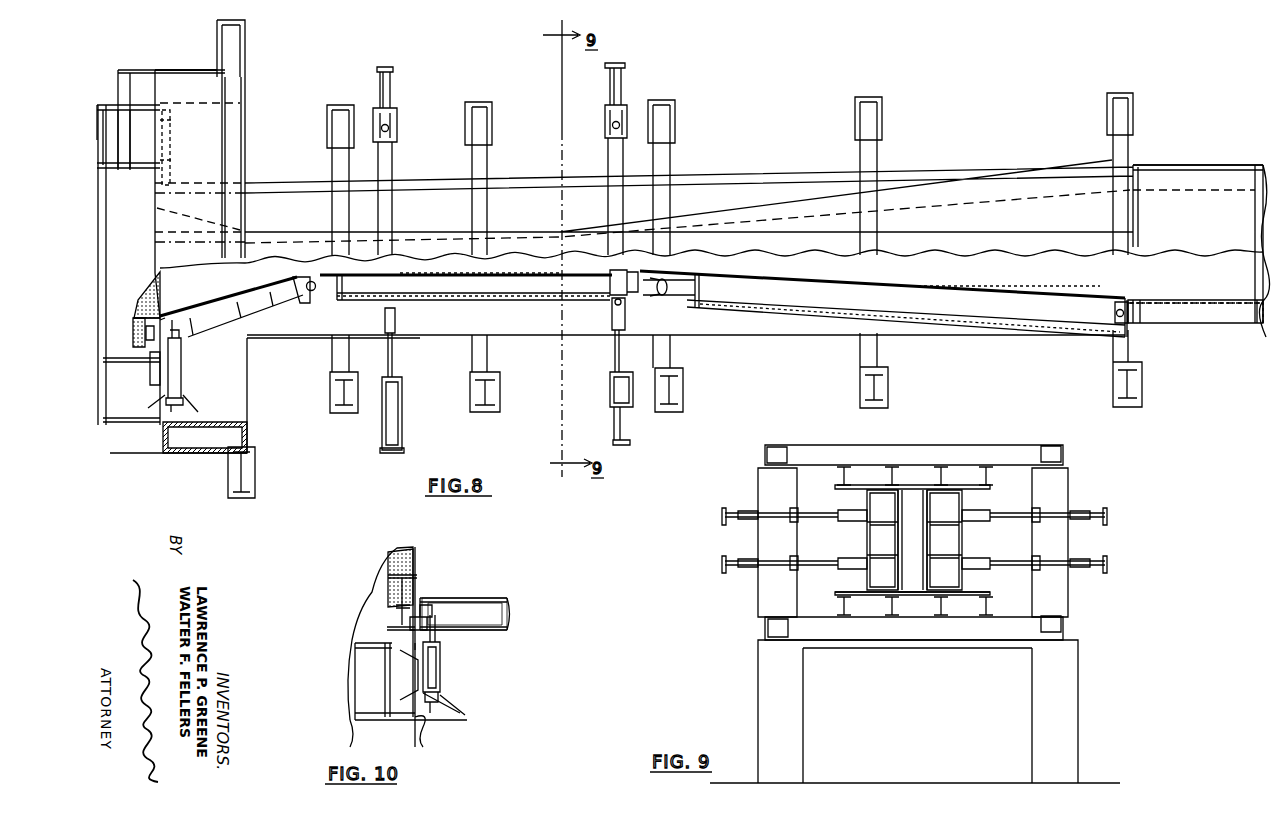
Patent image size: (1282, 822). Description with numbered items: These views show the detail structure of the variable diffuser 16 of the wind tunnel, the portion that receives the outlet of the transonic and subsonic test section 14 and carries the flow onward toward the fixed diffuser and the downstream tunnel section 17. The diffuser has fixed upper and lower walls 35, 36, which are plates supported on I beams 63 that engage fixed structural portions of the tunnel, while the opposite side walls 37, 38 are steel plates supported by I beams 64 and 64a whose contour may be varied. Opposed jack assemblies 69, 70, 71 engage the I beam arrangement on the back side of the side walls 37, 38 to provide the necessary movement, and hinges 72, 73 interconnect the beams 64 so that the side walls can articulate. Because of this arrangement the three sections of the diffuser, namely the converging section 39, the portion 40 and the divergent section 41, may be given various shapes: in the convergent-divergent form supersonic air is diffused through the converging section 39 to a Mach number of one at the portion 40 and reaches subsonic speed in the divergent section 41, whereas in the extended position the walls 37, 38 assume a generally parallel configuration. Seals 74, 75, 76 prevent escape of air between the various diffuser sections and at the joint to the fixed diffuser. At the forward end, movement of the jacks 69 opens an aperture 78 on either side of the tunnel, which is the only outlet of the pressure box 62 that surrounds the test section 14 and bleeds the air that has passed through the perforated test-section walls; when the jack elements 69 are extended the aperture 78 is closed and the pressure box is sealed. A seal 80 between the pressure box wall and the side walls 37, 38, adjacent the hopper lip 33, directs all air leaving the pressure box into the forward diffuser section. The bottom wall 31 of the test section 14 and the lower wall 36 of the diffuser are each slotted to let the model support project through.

In FIG. 8, the transonic and subsonic test section 14 is at (116, 89).
In FIG. 8, the variable diffuser 16 is at (426, 126).
In FIG. 8, the conveyor section 17 is at (1196, 124).
In FIG. 10, the bottom wall of test section 31 is at (387, 600).
In FIG. 8, the hopper lip 33 is at (146, 306).
In FIG. 10, the hopper lip 33 is at (412, 575).
In FIG. 8, the upper wall 35 is at (766, 200).
In FIG. 9, the upper wall 35 is at (960, 480).
In FIG. 8, the lower wall 36 is at (1162, 292).
In FIG. 9, the lower wall 36 is at (913, 595).
In FIG. 8, the side wall 37 is at (290, 238).
In FIG. 9, the side wall 37 is at (912, 577).
In FIG. 8, the side wall 38 is at (262, 318).
In FIG. 10, the side wall 38 is at (478, 598).
In FIG. 9, the side wall 38 is at (927, 530).
In FIG. 8, the converging section 39 is at (214, 290).
In FIG. 8, the portion 40 is at (548, 270).
In FIG. 8, the divergent section 41 is at (1036, 287).
In FIG. 8, the pressure box 62 is at (157, 372).
In FIG. 10, the pressure box 62 is at (407, 645).
In FIG. 8, the I beams 63 is at (540, 232).
In FIG. 9, the I beams 63 is at (933, 472).
In FIG. 8, the I beams 64 is at (480, 290).
In FIG. 9, the I beams 64 is at (897, 553).
In FIG. 8, the box beam 64a is at (958, 316).
In FIG. 8, the jack assembly 69 is at (176, 140).
In FIG. 10, the jack assembly 69 is at (438, 665).
In FIG. 8, the jack assembly 70 is at (380, 83).
In FIG. 8, the jack assembly 71 is at (608, 87).
In FIG. 9, the jack assembly 71 is at (722, 563).
In FIG. 8, the hinge 72 is at (310, 296).
In FIG. 8, the hinge 73 is at (663, 296).
In FIG. 8, the seal 74 is at (310, 258).
In FIG. 8, the seal 75 is at (666, 276).
In FIG. 8, the seal 76 is at (1124, 297).
In FIG. 10, the aperture 78 is at (413, 598).
In FIG. 8, the seal 80 is at (142, 331).
In FIG. 10, the seal 80 is at (433, 607).